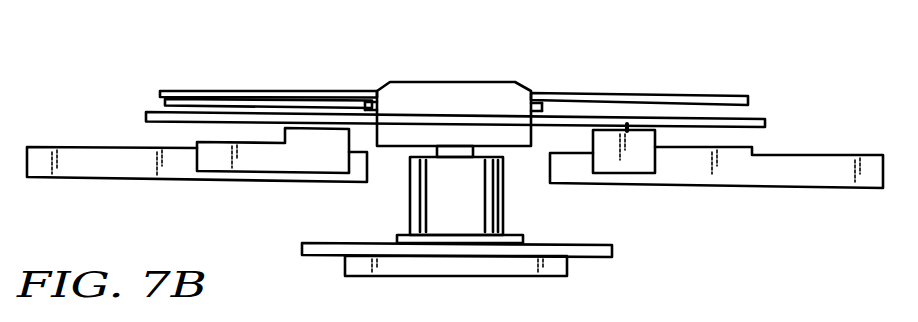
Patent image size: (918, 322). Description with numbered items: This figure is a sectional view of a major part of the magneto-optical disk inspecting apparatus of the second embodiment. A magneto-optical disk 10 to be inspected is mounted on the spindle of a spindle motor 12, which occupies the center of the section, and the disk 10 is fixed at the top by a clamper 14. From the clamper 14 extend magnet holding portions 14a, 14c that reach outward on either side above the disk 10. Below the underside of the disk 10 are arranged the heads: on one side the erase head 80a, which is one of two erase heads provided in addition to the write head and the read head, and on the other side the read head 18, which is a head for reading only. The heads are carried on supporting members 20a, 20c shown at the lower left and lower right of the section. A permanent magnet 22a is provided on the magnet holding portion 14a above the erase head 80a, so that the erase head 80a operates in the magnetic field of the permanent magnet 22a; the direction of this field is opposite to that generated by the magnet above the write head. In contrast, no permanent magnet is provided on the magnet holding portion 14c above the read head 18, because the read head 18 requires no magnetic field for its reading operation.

The magneto-optical disk 10 is at (148, 113).
The spindle motor 12 is at (523, 221).
The clamper 14 is at (459, 84).
The magnet holding portion 14a is at (247, 90).
The magnet holding portion 14c is at (677, 96).
The read head 18 is at (725, 188).
The first base arm 20a is at (91, 179).
The second base arm 20c is at (829, 190).
The permanent magnet 22a is at (160, 96).
The erase head 80a is at (232, 175).